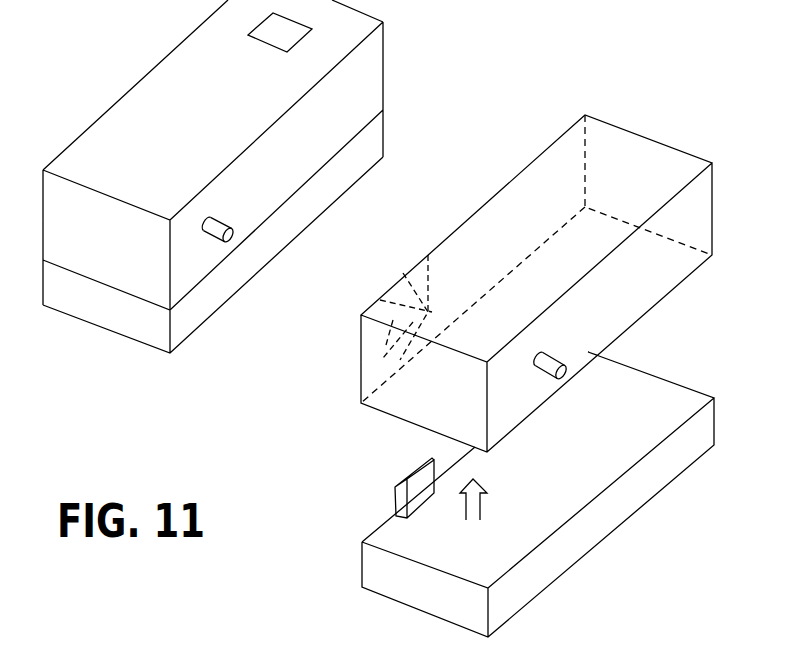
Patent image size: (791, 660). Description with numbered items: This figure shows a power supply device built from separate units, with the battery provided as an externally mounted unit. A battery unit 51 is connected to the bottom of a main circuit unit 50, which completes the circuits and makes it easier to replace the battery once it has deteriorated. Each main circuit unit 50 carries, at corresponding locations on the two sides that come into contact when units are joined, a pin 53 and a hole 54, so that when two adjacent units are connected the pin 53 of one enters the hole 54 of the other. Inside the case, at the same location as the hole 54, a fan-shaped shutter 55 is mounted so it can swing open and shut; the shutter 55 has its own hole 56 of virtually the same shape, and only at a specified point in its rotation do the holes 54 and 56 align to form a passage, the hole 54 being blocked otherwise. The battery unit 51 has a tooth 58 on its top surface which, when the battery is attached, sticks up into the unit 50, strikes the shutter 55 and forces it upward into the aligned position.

The main circuit unit 50 is at (367, 83).
The battery unit 51 is at (127, 320).
The pin 53 is at (213, 232).
The hole 54 is at (403, 273).
The fan-shaped shutter 55 is at (380, 300).
The hole 56 is at (428, 255).
The tooth 58 is at (395, 500).